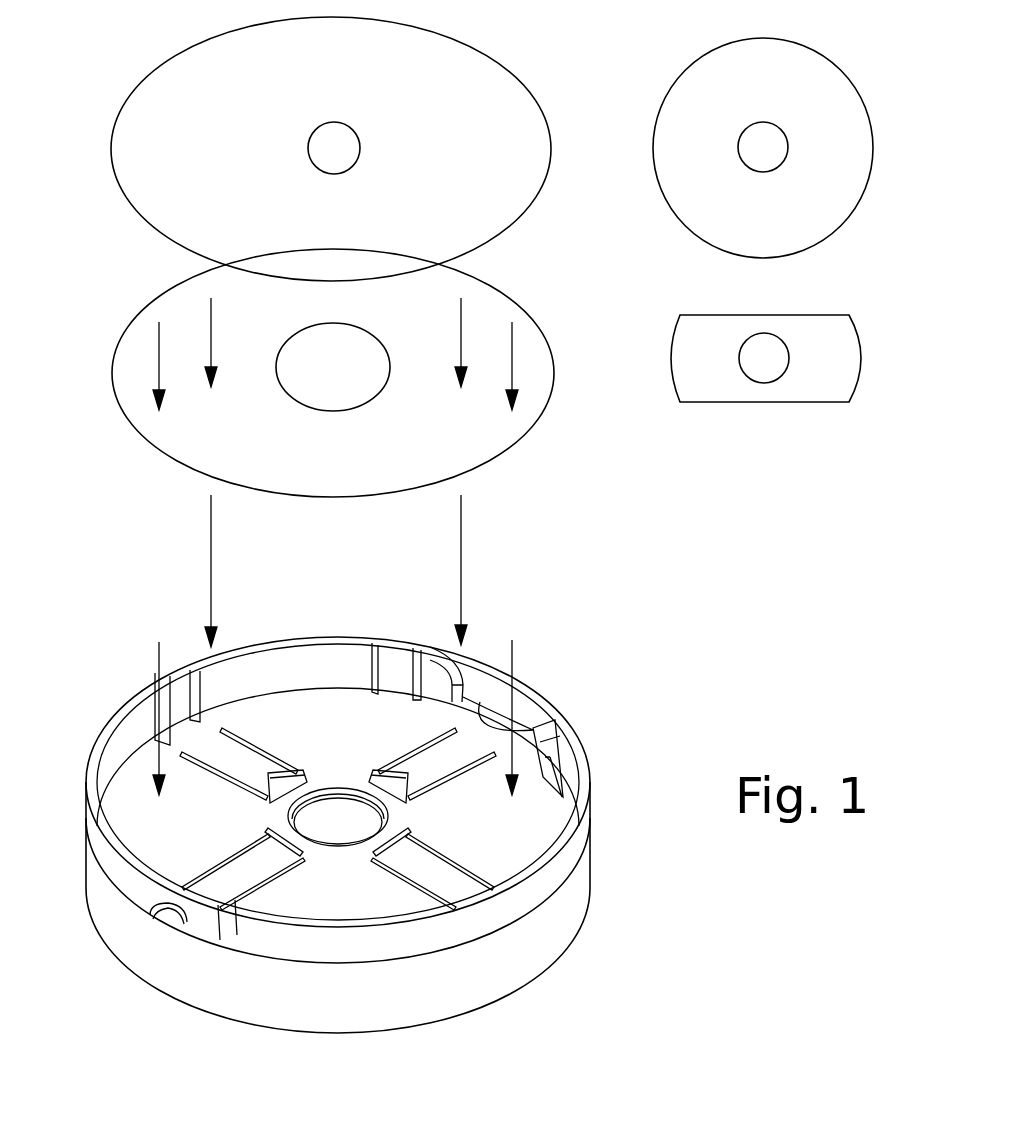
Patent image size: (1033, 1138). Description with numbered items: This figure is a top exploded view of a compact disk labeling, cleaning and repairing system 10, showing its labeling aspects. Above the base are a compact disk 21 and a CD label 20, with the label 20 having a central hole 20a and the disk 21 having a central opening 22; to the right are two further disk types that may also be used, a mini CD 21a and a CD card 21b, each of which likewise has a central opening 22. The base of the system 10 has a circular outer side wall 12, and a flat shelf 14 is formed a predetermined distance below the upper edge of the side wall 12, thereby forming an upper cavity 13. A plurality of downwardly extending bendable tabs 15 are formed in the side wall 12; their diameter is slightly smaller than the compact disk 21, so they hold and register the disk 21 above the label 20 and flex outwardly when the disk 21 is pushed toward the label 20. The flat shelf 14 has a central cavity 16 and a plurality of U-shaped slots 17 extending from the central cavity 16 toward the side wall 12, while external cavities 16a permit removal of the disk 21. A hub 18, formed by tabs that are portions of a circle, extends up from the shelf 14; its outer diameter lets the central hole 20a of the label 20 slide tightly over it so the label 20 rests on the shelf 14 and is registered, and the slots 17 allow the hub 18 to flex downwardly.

The compact disk labeling, cleaning and repairing system 10 is at (604, 675).
The circular outer side wall 12 is at (292, 642).
The upper cavity 13 is at (348, 735).
The flat shelf 14 is at (138, 797).
The downwardly extending bendable tabs 15 is at (400, 667).
The central cavity 16 is at (340, 823).
The external cavities 16a is at (170, 920).
The U-shaped slots 17 is at (458, 777).
The hub 18 is at (231, 831).
The CD label 20 is at (550, 324).
The central hole 20a is at (375, 340).
The compact disk 21 is at (540, 105).
The mini CD 21a is at (865, 102).
The CD card 21b is at (820, 315).
The central opening 22 is at (347, 127).